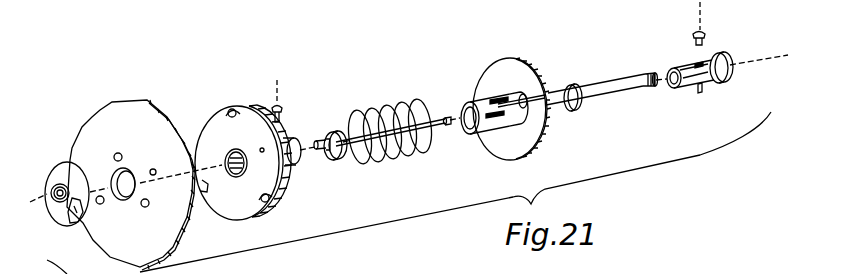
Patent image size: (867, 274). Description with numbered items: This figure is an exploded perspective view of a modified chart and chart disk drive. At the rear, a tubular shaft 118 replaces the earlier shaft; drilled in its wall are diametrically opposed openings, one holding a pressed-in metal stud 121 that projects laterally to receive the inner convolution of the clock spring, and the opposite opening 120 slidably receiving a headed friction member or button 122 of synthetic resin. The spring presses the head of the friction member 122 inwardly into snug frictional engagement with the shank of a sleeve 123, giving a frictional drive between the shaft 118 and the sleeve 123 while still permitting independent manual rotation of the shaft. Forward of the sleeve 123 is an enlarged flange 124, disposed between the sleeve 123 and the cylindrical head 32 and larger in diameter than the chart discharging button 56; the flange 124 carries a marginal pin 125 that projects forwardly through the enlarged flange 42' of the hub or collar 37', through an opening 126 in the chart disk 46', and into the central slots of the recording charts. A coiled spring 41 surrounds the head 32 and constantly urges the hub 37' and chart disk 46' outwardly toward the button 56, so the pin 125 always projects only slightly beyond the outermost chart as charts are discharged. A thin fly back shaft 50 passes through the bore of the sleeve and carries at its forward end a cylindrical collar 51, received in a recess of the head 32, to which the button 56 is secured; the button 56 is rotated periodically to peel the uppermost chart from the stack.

The chart discharging button 56 is at (63, 162).
The chart disk 46' is at (131, 172).
The opening 126 is at (156, 169).
The enlarged flange 42' is at (248, 147).
The hub or collar 37' is at (297, 108).
The cylindrical collar 51 is at (332, 161).
The coiled spring 41 is at (408, 150).
The fly back shaft 50 is at (437, 112).
The cylindrical head 32 is at (467, 105).
The flange 124 is at (508, 67).
The marginal pin 125 is at (524, 104).
The sleeve 123 is at (617, 77).
The shaft 118 is at (687, 90).
The opening 120 is at (695, 62).
The metal stud 121 is at (700, 92).
The friction member or button 122 is at (707, 37).